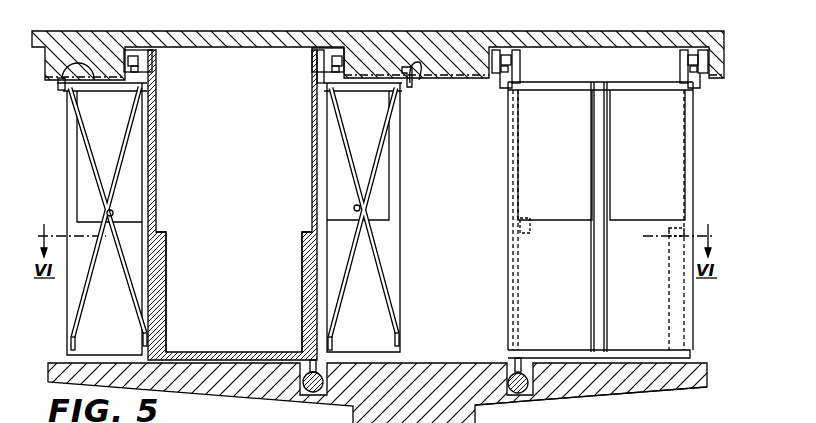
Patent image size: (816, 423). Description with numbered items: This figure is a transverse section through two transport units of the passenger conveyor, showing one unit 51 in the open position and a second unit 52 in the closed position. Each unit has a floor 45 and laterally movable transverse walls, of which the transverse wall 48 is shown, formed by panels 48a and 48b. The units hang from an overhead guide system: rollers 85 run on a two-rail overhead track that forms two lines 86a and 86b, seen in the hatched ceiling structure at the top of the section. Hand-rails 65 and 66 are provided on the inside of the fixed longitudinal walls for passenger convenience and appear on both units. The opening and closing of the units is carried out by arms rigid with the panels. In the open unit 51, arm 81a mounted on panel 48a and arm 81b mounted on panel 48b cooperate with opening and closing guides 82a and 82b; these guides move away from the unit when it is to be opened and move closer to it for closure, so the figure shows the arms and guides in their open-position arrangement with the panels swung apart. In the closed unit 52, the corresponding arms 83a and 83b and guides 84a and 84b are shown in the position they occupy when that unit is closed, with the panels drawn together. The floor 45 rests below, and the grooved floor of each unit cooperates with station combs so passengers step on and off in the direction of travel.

The floor 45 is at (377, 393).
The laterally movable transverse wall 48 is at (537, 390).
The panel 48a is at (363, 217).
The panel 48b is at (102, 219).
The transport unit 51 is at (232, 205).
The transport unit 52 is at (612, 404).
The hand-rail 65 is at (305, 232).
The hand-rail 66 is at (155, 232).
The arm 81a is at (405, 90).
The arm 81b is at (63, 92).
The opening and closing guide 82a is at (414, 65).
The opening and closing guide 82b is at (95, 79).
The arm 83a is at (512, 76).
The arm 83b is at (690, 96).
The opening and closing guide 84a is at (497, 75).
The opening and closing guide 84b is at (705, 82).
The roller 85 is at (140, 52).
The track line 86a is at (683, 60).
The track line 86b is at (330, 63).